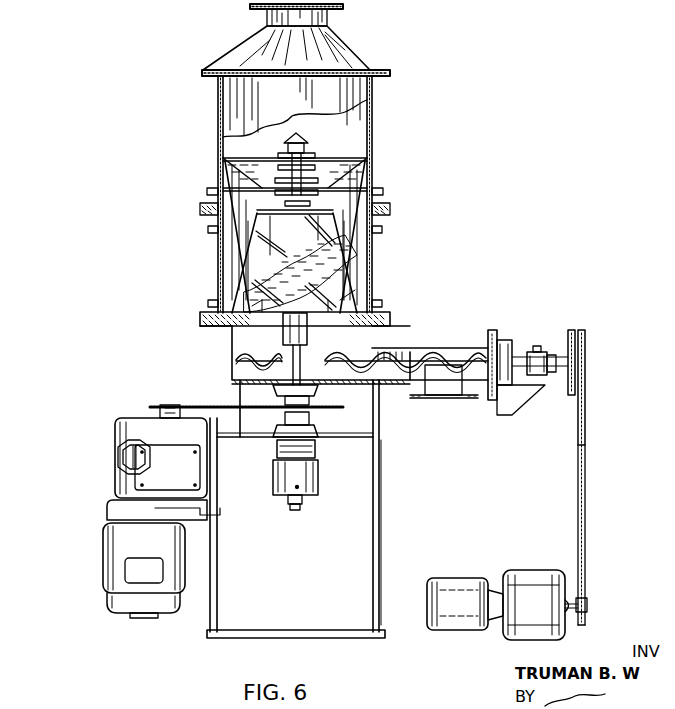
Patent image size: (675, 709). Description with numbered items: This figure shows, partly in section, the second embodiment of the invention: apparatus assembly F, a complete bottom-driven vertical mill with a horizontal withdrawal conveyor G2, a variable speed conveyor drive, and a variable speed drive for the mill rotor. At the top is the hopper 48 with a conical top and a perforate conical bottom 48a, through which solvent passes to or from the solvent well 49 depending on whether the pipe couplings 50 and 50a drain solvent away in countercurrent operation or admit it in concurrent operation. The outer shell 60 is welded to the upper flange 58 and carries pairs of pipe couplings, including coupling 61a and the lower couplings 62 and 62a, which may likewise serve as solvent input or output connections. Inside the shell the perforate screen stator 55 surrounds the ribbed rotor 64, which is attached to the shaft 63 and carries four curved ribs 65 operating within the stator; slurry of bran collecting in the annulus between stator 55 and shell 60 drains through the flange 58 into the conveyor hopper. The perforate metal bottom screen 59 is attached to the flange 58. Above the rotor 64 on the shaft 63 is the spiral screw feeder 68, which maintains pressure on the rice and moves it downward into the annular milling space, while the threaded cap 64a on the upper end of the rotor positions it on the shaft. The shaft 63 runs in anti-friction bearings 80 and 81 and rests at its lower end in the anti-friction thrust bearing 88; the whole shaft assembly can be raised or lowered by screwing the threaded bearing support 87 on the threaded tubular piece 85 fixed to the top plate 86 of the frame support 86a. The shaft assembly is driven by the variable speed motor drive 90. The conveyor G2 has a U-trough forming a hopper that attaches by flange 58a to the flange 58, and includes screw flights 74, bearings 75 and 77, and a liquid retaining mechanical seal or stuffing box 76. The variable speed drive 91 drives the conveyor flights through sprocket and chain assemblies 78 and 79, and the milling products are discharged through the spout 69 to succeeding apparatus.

The apparatus assembly F is at (218, 108).
The hopper 48 is at (335, 120).
The spiral screw feeder 68 is at (340, 128).
The perforate conical bottom 48a is at (330, 150).
The solvent well 49 is at (325, 168).
The threaded cap 64a is at (322, 181).
The pipe coupling 50a is at (322, 193).
The pipe coupling 50 is at (218, 228).
The pipe coupling 61a is at (372, 235).
The ribbed rotor 64 is at (260, 236).
The perforate screen stator 55 is at (368, 255).
The curved ribs 65 is at (270, 260).
The outer shell 60 is at (355, 278).
The pipe coupling 62 is at (218, 288).
The pipe coupling 62a is at (372, 297).
The upper flange 58 is at (385, 315).
The flange 58a is at (392, 327).
The perforate metal bottom screen 59 is at (232, 328).
The shaft 63 is at (312, 352).
The screw flights 74 is at (235, 352).
The bearing 75 is at (246, 366).
The spout 69 is at (433, 396).
The withdrawal conveyor G2 is at (466, 348).
The mechanical seal or stuffing box 76 is at (512, 340).
The bearing 77 is at (540, 378).
The sprocket and chain assembly 79 is at (574, 332).
The sprocket and chain assembly 78 is at (586, 342).
The anti-friction bearing 80 is at (318, 388).
The anti-friction bearing 81 is at (318, 431).
The top plate 86 is at (368, 436).
The frame support 86a is at (381, 540).
The threaded tubular piece 85 is at (315, 458).
The threaded bearing support 87 is at (315, 478).
The anti-friction thrust bearing 88 is at (302, 497).
The variable speed motor drive 90 is at (104, 548).
The variable speed drive 91 is at (447, 580).